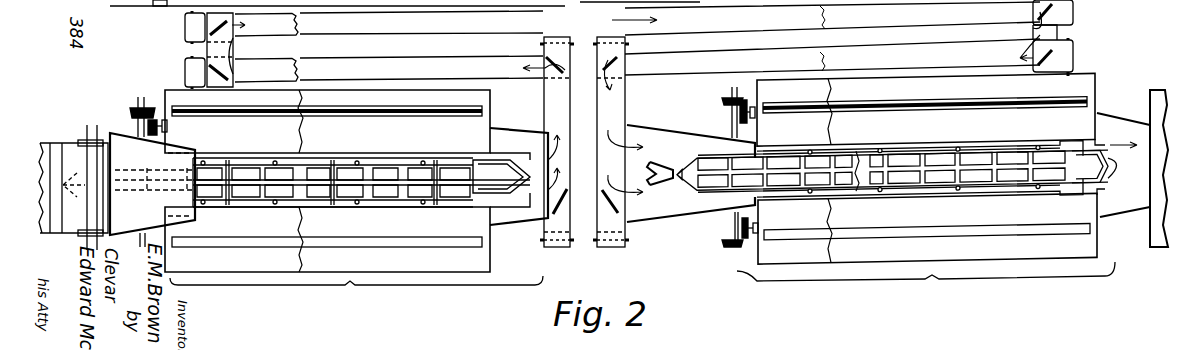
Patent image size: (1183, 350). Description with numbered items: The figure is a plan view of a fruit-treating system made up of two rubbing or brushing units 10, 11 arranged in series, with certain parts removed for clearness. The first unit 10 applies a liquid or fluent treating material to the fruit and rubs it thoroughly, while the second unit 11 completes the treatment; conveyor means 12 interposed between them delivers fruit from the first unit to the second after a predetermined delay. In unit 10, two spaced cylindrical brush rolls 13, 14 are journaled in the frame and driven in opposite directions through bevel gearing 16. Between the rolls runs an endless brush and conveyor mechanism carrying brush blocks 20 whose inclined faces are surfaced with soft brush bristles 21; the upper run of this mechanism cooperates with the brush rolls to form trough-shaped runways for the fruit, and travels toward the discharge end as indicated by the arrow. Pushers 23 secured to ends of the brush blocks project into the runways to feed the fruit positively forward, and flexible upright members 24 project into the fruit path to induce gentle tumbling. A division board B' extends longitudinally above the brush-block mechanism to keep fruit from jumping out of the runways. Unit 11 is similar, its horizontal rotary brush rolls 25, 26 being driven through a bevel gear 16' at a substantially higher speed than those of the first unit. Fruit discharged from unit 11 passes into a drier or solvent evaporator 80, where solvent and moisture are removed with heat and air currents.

The rubbing or brushing unit 10 is at (362, 313).
The rubbing or brushing unit 11 is at (942, 297).
The conveyor means 12 is at (392, 54).
The brush roll 13 is at (473, 127).
The brush roll 14 is at (483, 253).
The bevel gearing 16 is at (151, 100).
The bevel gear 16' is at (703, 183).
The brush blocks 20 is at (423, 188).
The brush bristles 21 is at (740, 177).
The pushers 23 is at (230, 205).
The upright members 24 is at (385, 195).
The brush roll 25 is at (762, 109).
The brush roll 26 is at (802, 268).
The drier or solvent evaporator 80 is at (1155, 108).
The division board B' is at (591, 152).